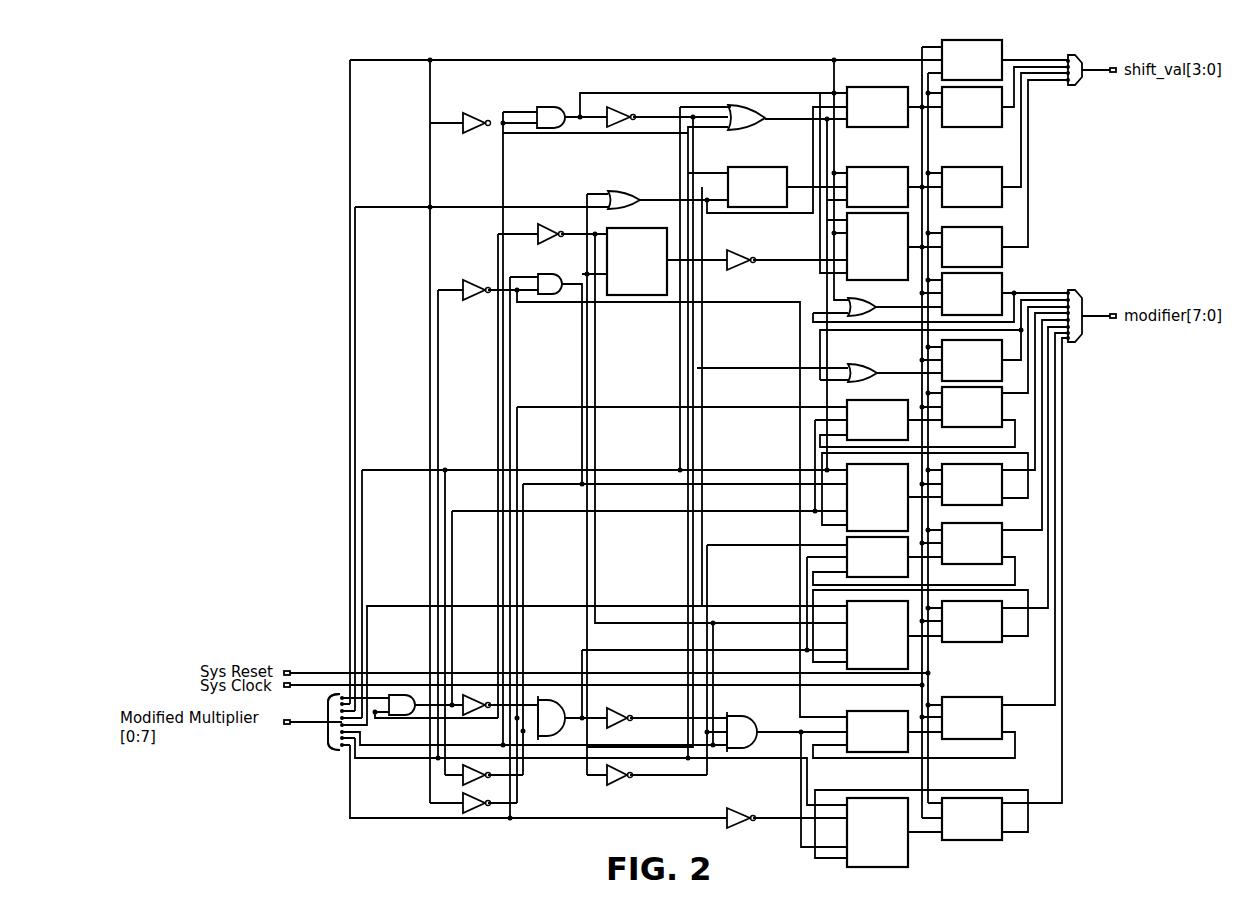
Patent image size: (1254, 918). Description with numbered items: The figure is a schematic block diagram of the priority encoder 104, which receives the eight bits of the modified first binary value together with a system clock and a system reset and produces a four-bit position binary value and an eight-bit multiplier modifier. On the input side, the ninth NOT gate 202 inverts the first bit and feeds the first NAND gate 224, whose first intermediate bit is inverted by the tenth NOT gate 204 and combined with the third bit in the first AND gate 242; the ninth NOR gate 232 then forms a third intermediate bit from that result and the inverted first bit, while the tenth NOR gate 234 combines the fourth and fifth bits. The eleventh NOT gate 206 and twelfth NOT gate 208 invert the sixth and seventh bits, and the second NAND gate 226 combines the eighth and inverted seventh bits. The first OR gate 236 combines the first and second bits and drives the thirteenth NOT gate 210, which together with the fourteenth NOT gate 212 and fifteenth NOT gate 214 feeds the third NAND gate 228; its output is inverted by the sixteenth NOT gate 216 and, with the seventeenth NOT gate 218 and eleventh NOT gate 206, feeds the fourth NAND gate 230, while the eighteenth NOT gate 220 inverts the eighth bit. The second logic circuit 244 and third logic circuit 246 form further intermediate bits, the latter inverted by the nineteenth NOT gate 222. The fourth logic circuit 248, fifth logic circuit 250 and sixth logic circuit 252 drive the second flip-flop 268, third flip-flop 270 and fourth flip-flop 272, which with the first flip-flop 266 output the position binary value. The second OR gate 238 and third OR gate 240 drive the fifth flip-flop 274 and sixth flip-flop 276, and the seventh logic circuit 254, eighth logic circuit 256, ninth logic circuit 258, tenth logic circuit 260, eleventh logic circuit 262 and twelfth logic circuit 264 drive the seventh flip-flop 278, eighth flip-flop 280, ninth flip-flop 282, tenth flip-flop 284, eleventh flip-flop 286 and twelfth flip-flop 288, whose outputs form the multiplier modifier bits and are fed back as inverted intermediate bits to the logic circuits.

The priority encoder 104 is at (152, 789).
The ninth NOT gate 202 is at (487, 128).
The tenth NOT gate 204 is at (623, 124).
The eleventh NOT gate 206 is at (553, 240).
The twelfth NOT gate 208 is at (484, 296).
The thirteenth NOT gate 210 is at (474, 696).
The fourteenth NOT gate 212 is at (470, 812).
The fifteenth NOT gate 214 is at (466, 783).
The sixteenth NOT gate 216 is at (615, 710).
The seventeenth NOT gate 218 is at (620, 782).
The eighteenth NOT gate 220 is at (740, 812).
The nineteenth NOT gate 222 is at (745, 267).
The first NAND gate 224 is at (552, 129).
The second NAND gate 226 is at (552, 296).
The third NAND gate 228 is at (548, 699).
The fourth NAND gate 230 is at (742, 715).
The ninth NOR gate 232 is at (748, 129).
The tenth NOR gate 234 is at (626, 192).
The first OR gate 236 is at (400, 694).
The second OR gate 238 is at (866, 316).
The third OR gate 240 is at (856, 364).
The first AND gate 242 is at (738, 106).
The second logic circuit 244 is at (757, 187).
The third logic circuit 246 is at (637, 261).
The fourth logic circuit 248 is at (877, 107).
The fifth logic circuit 250 is at (877, 187).
The sixth logic circuit 252 is at (877, 246).
The seventh logic circuit 254 is at (877, 420).
The eighth logic circuit 256 is at (877, 497).
The ninth logic circuit 258 is at (877, 557).
The tenth logic circuit 260 is at (877, 635).
The eleventh logic circuit 262 is at (877, 731).
The twelfth logic circuit 264 is at (877, 832).
The first flip-flop 266 is at (972, 60).
The second flip-flop 268 is at (972, 107).
The third flip-flop 270 is at (972, 187).
The fourth flip-flop 272 is at (972, 247).
The fifth flip-flop 274 is at (972, 294).
The sixth flip-flop 276 is at (972, 360).
The seventh flip-flop 278 is at (972, 407).
The eighth flip-flop 280 is at (972, 484).
The ninth flip-flop 282 is at (972, 543).
The tenth flip-flop 284 is at (972, 621).
The eleventh flip-flop 286 is at (972, 718).
The twelfth flip-flop 288 is at (972, 819).